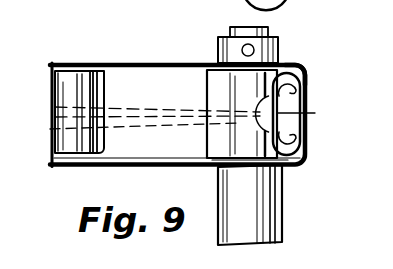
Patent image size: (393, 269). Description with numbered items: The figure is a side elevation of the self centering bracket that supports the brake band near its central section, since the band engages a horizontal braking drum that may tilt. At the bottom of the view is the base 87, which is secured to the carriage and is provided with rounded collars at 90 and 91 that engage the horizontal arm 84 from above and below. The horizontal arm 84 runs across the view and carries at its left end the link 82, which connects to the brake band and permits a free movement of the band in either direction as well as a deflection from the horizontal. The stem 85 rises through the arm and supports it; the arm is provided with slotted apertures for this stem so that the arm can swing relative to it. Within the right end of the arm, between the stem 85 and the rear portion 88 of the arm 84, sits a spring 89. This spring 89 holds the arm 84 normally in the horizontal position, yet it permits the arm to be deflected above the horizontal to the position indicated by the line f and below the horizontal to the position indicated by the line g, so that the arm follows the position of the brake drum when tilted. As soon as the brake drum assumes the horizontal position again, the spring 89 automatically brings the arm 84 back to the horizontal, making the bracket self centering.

The link 82 is at (53, 82).
The horizontal arm 84 is at (152, 62).
The stem 85 is at (263, 27).
The base 87 is at (250, 199).
The rear portion of arm 88 is at (307, 99).
The spring 89 is at (290, 122).
The rounded collar 90 is at (283, 64).
The rounded collar 91 is at (215, 170).
The line f is at (55, 117).
The line g is at (50, 131).